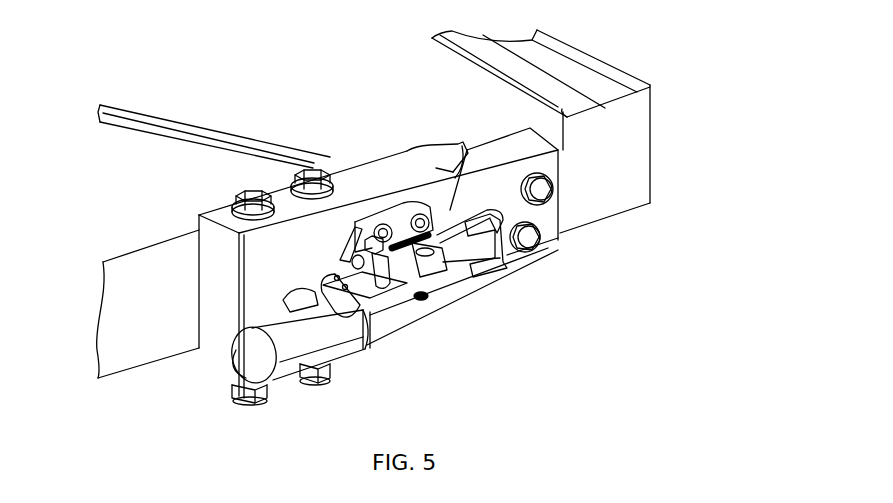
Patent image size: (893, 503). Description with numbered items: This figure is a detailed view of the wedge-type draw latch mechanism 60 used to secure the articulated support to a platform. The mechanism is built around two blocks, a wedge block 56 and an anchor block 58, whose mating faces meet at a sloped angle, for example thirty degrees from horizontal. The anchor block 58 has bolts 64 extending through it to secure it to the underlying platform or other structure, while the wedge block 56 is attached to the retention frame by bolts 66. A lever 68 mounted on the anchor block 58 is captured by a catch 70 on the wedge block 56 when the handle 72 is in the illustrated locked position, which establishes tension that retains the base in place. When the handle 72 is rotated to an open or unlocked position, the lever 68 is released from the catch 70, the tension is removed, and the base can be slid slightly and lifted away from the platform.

The wedge block 56 is at (500, 128).
The anchor block 58 is at (416, 157).
The wedge-type draw latch mechanism 60 is at (493, 350).
The bolts 64 is at (253, 198).
The bolts 66 is at (550, 192).
The lever 68 is at (468, 288).
The catch 70 is at (503, 268).
The handle 72 is at (246, 348).